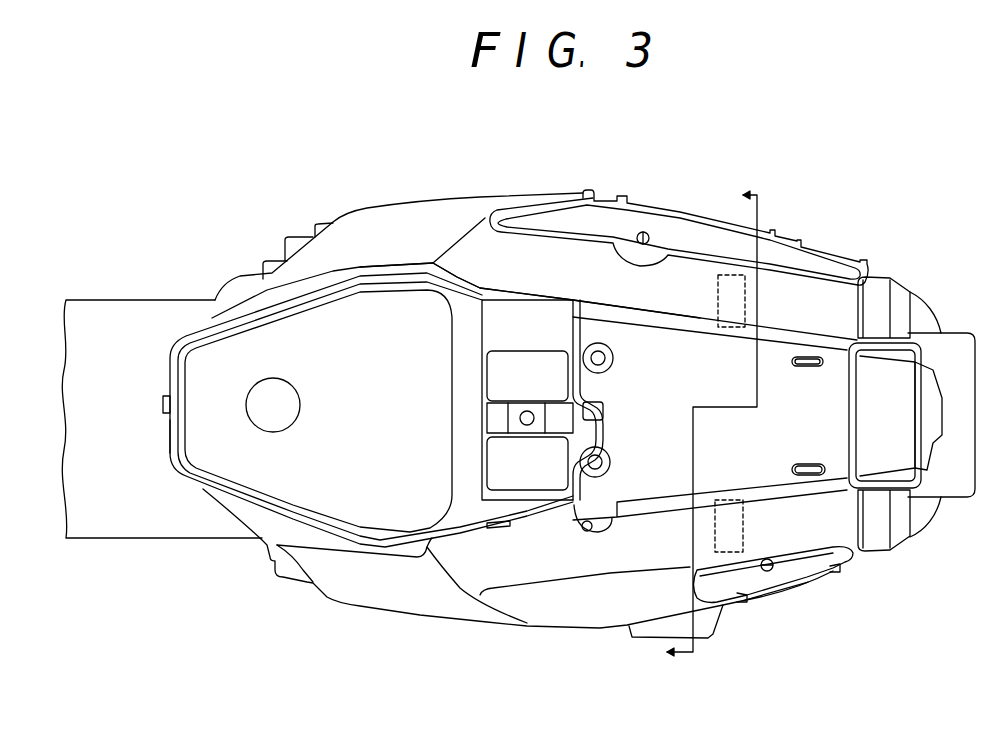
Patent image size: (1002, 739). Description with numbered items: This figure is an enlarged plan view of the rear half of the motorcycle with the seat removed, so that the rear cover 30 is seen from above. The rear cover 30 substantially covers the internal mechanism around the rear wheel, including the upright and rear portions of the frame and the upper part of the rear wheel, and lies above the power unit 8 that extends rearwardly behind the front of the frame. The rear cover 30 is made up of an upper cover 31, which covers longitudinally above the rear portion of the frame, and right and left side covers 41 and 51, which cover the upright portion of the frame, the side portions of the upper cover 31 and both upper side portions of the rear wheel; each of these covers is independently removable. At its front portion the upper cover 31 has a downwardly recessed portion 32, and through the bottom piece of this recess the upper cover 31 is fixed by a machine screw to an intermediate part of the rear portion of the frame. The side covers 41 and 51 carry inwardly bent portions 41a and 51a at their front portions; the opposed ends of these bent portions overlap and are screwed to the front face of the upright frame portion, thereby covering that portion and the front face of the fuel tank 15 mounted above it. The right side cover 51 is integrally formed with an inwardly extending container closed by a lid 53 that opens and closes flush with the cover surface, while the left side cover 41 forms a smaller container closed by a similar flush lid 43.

The fuel tank 15 is at (292, 462).
The rear cover 30 is at (610, 640).
The upper cover 31 is at (753, 455).
The downwardly recessed portion 32 is at (498, 462).
The left side cover 41 is at (488, 558).
The inwardly bent portion 41a is at (167, 430).
The lid 43 is at (731, 588).
The right side cover 51 is at (485, 247).
The inwardly bent portion 51a is at (166, 395).
The lid 53 is at (720, 242).
The power unit 8 is at (725, 436).